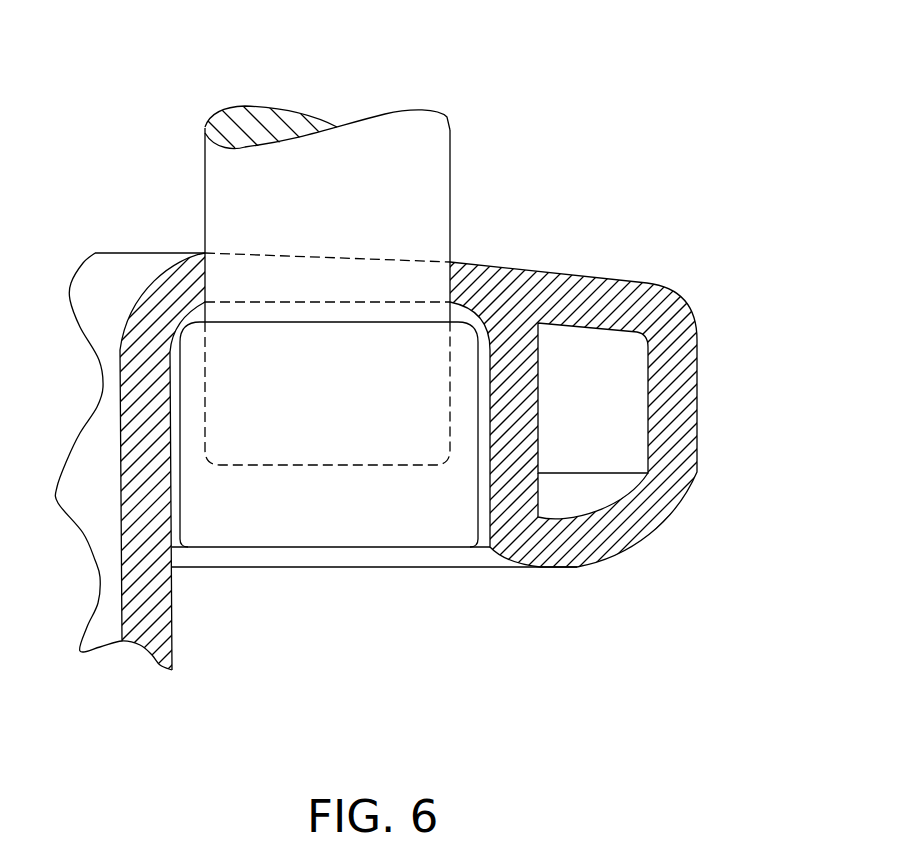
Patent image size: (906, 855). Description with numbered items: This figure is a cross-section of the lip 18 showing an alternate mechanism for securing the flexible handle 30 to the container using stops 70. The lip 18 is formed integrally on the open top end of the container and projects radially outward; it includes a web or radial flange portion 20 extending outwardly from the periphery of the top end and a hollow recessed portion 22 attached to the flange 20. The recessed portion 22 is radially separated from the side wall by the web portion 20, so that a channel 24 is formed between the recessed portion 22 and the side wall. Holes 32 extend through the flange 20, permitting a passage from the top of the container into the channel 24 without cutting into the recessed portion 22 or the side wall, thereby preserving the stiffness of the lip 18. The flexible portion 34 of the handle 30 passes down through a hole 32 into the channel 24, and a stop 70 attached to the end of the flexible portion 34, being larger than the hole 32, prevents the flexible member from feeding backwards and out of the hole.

The lip 18 is at (642, 157).
The web or radial flange portion 20 is at (173, 268).
The recessed portion 22 is at (697, 368).
The channel 24 is at (347, 627).
The flexible handle 30 is at (369, 162).
The holes 32 is at (450, 262).
The flexible portion 34 is at (350, 170).
The stops 70 is at (477, 548).